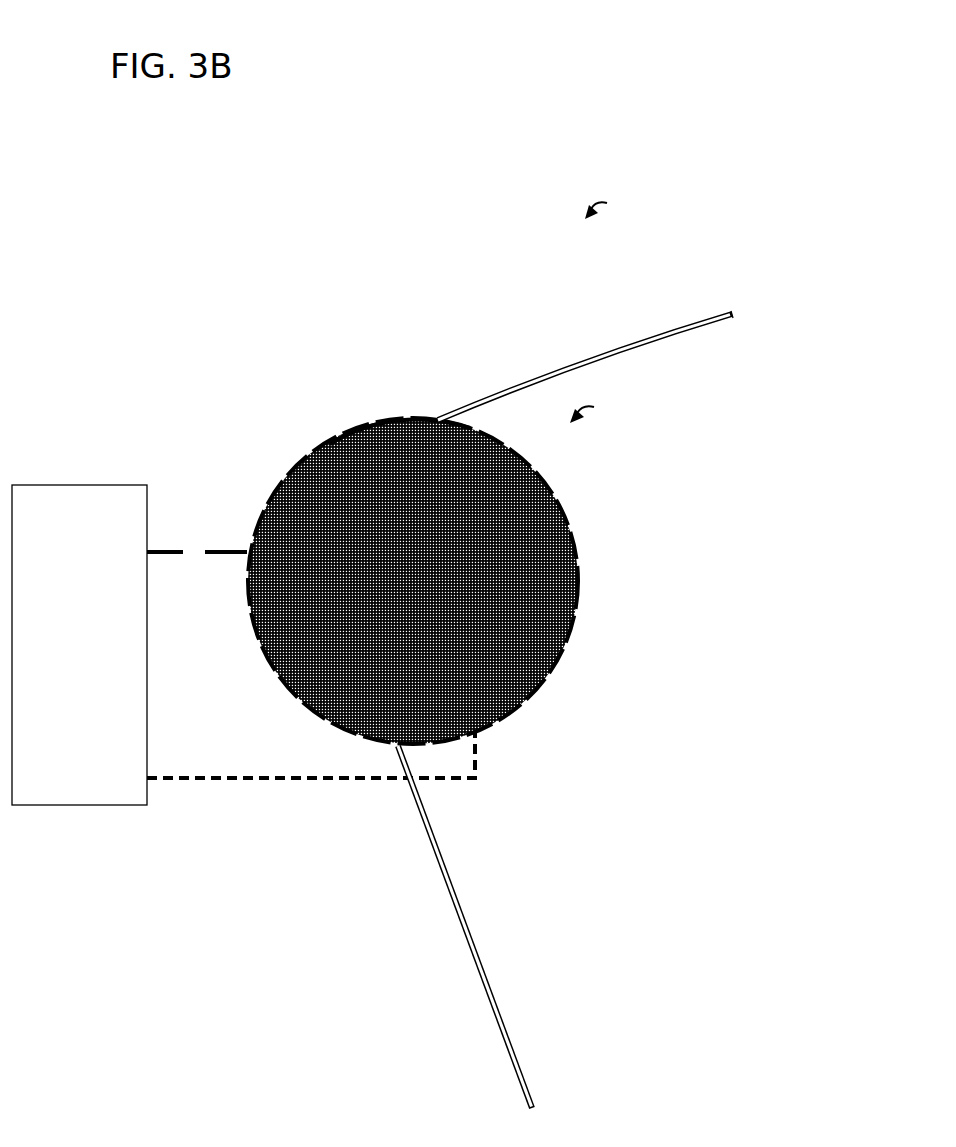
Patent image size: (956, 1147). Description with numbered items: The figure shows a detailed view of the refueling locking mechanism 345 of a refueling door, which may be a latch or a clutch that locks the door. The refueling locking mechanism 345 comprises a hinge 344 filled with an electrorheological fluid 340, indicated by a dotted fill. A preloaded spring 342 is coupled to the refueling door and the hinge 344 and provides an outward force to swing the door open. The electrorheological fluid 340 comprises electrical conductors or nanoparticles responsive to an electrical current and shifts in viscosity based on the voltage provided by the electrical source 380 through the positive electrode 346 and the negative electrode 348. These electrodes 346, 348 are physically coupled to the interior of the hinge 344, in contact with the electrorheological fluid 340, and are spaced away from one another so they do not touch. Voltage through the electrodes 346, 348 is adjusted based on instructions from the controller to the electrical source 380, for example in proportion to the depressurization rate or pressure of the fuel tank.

The electrorheological fluid 340 is at (312, 502).
The preloaded spring 342 is at (700, 318).
The hinge 344 is at (599, 409).
The refueling locking mechanism 345 is at (613, 206).
The positive electrode 346 is at (562, 510).
The negative electrode 348 is at (376, 418).
The electrical source 380 is at (96, 656).